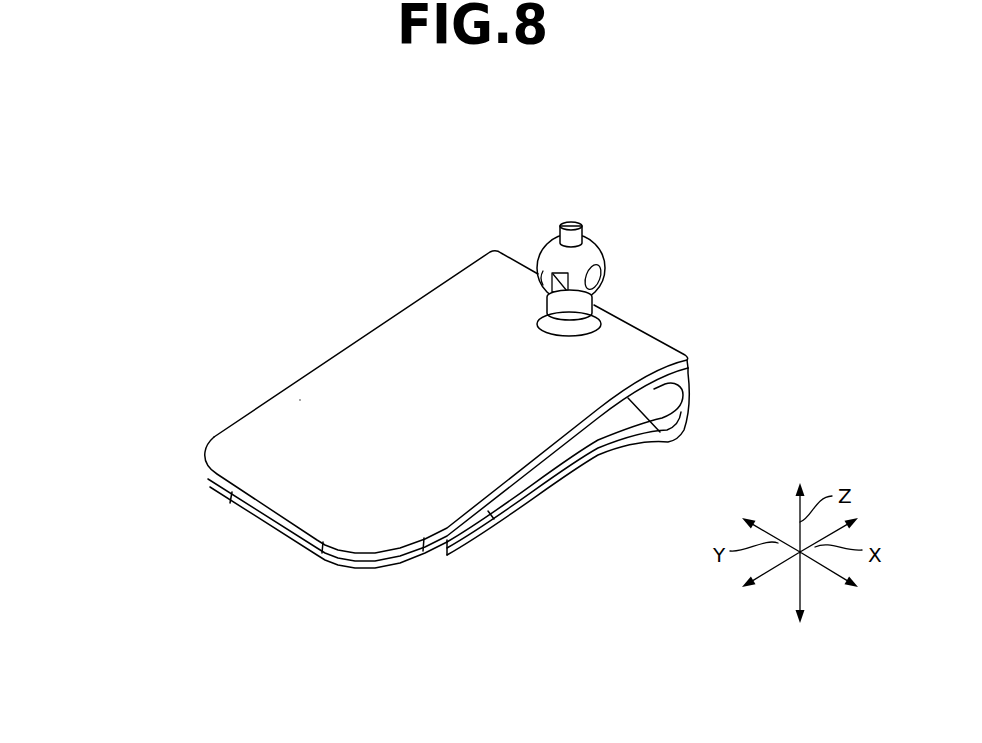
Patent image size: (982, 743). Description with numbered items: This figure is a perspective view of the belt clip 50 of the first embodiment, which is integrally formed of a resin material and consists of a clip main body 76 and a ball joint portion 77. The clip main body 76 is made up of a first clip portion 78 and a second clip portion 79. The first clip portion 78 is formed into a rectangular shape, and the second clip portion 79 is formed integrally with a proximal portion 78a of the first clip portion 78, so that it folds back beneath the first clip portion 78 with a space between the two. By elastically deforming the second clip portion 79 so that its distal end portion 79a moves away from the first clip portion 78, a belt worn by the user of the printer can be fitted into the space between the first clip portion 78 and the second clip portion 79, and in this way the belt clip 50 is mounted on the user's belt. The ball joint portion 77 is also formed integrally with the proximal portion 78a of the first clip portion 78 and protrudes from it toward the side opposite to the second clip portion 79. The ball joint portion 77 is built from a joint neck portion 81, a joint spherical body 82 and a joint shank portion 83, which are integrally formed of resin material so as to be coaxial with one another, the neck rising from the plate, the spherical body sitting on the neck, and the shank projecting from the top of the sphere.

The belt clip 50 is at (276, 150).
The clip main body 76 is at (392, 390).
The ball joint portion 77 is at (335, 113).
The first clip portion 78 is at (228, 467).
The proximal portion 78a is at (610, 343).
The second clip portion 79 is at (620, 453).
The distal end portion 79a is at (447, 555).
The joint neck portion 81 is at (557, 307).
The joint spherical body 82 is at (544, 249).
The joint shank portion 83 is at (568, 223).